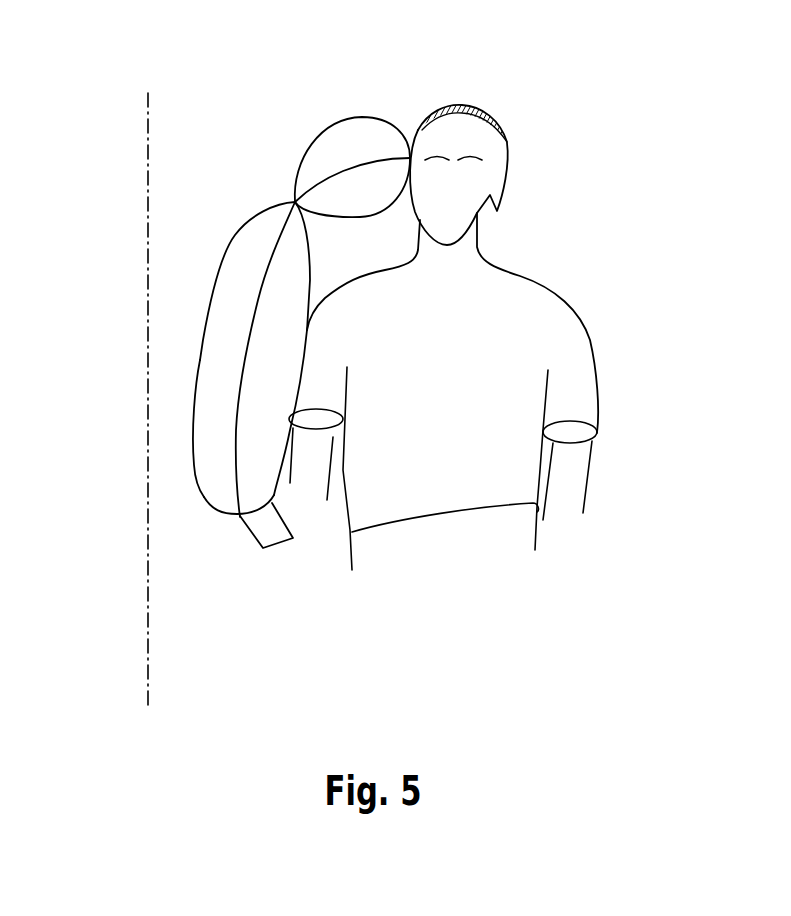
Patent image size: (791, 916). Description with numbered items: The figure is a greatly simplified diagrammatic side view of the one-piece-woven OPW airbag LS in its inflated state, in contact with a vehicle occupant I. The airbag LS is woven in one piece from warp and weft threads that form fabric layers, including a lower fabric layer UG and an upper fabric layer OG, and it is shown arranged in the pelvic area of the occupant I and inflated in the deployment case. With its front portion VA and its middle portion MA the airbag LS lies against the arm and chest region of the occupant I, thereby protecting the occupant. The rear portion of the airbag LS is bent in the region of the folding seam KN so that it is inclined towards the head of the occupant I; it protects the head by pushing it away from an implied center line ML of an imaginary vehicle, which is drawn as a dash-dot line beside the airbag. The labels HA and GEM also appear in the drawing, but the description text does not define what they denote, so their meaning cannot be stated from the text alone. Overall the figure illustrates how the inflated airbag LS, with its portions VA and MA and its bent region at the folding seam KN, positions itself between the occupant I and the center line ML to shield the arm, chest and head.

The center line ML is at (148, 130).
The head airbag chamber HA is at (325, 96).
The folding seam KN is at (277, 187).
The lower fabric layer UG is at (312, 273).
The upper fabric layer OG is at (197, 353).
The middle portion MA is at (193, 279).
The front portion VA is at (168, 429).
The OPW airbag LS is at (220, 480).
The gas generator module GEM is at (284, 535).
The vehicle occupant I is at (604, 266).